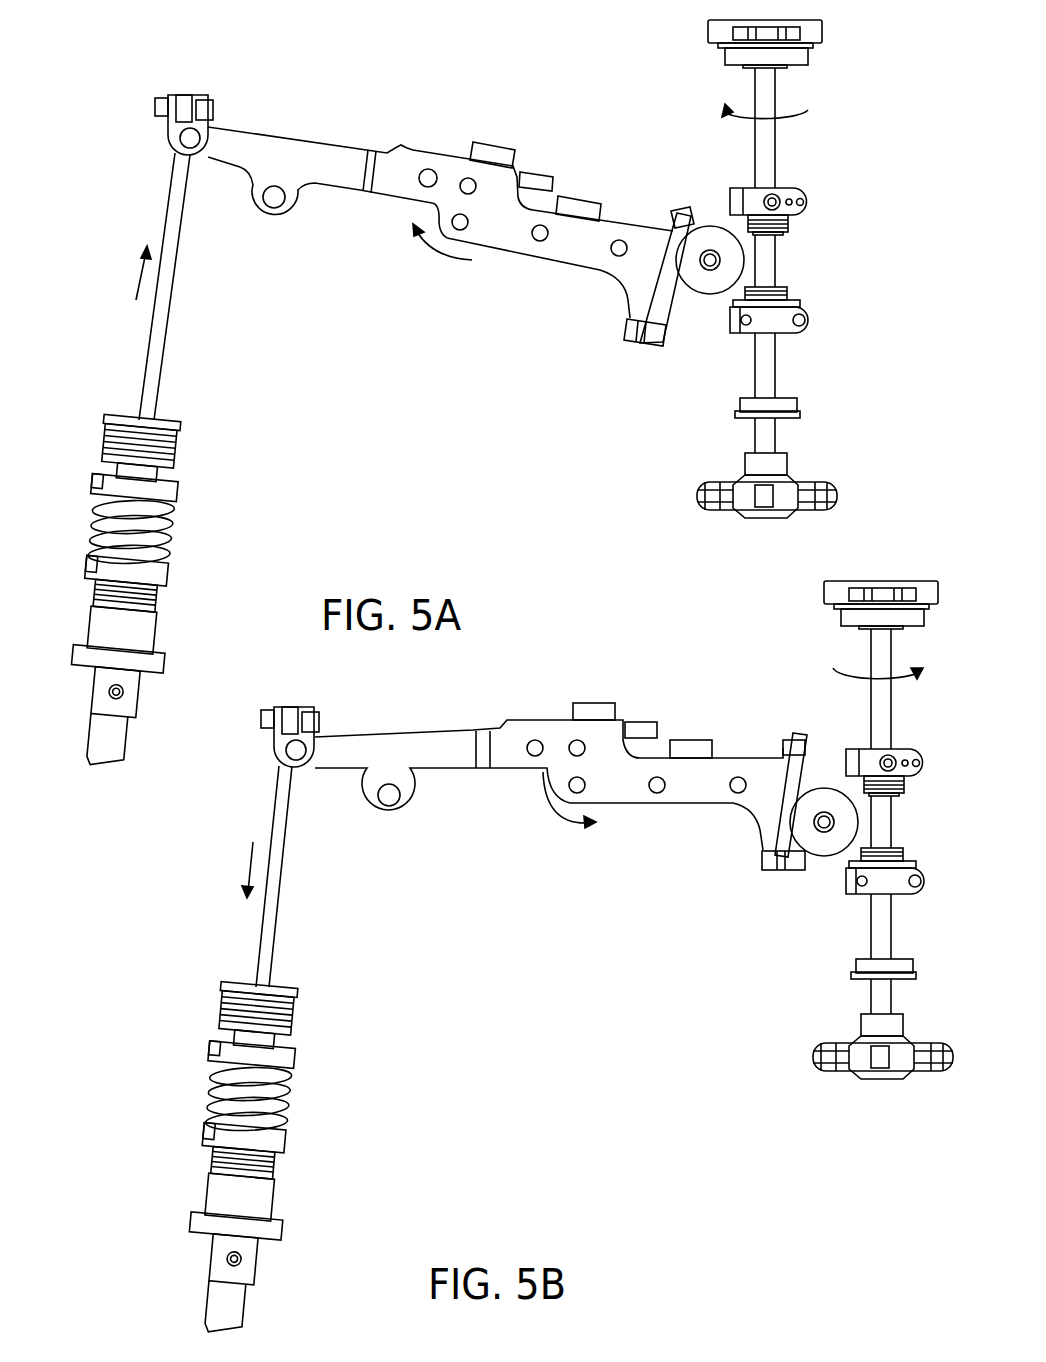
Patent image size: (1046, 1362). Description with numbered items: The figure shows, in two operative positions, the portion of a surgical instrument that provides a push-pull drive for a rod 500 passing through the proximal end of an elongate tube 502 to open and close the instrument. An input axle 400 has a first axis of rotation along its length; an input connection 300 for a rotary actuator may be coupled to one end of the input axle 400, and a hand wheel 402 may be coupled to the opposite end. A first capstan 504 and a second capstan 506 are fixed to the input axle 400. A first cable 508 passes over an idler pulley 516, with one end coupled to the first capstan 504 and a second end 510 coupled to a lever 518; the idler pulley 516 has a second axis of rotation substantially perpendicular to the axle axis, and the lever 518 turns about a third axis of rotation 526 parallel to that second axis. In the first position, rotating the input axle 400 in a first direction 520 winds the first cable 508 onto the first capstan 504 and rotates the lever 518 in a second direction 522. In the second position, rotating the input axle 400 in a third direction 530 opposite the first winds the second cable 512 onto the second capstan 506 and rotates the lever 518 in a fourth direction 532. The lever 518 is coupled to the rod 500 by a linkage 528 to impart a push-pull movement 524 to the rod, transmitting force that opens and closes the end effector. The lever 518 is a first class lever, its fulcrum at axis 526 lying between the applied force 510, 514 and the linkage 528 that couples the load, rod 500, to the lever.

In FIG. 5A, the input connection 300 is at (705, 33).
In FIG. 5B, the input connection 300 is at (825, 596).
In FIG. 5A, the input axle 400 is at (752, 372).
In FIG. 5B, the input axle 400 is at (868, 935).
In FIG. 5A, the hand wheel 402 is at (768, 518).
In FIG. 5B, the hand wheel 402 is at (883, 1080).
In FIG. 5A, the rod 500 is at (145, 366).
In FIG. 5B, the rod 500 is at (254, 957).
In FIG. 5A, the elongate tube 502 is at (92, 738).
In FIG. 5B, the elongate tube 502 is at (210, 1303).
In FIG. 5A, the first capstan 504 is at (788, 296).
In FIG. 5B, the first capstan 504 is at (903, 858).
In FIG. 5A, the second capstan 506 is at (788, 228).
In FIG. 5B, the second capstan 506 is at (905, 789).
In FIG. 5A, the first cable 508 is at (738, 330).
In FIG. 5B, the first cable 508 is at (852, 893).
In FIG. 5A, the second end of first cable 510 is at (672, 217).
In FIG. 5B, the second end of first cable 510 is at (785, 748).
In FIG. 5A, the second cable 512 is at (745, 214).
In FIG. 5B, the second cable 512 is at (860, 776).
In FIG. 5A, the applied force point 514 is at (630, 335).
In FIG. 5B, the applied force point 514 is at (765, 862).
In FIG. 5A, the idler pulley 516 is at (689, 292).
In FIG. 5B, the idler pulley 516 is at (812, 858).
In FIG. 5A, the lever 518 is at (414, 148).
In FIG. 5B, the lever 518 is at (532, 718).
In FIG. 5A, the first direction 520 is at (800, 126).
In FIG. 5A, the second direction 522 is at (437, 258).
In FIG. 5A, the push-pull movement 524 is at (134, 276).
In FIG. 5B, the push-pull movement 524 is at (247, 868).
In FIG. 5A, the third axis of rotation 526 is at (468, 223).
In FIG. 5B, the third axis of rotation 526 is at (585, 784).
In FIG. 5A, the linkage 528 is at (190, 97).
In FIG. 5B, the linkage 528 is at (298, 712).
In FIG. 5B, the third direction 530 is at (922, 682).
In FIG. 5B, the fourth direction 532 is at (565, 826).